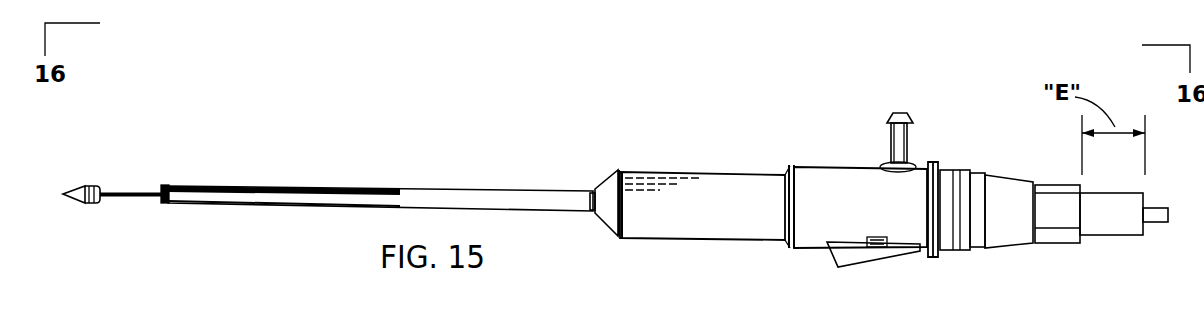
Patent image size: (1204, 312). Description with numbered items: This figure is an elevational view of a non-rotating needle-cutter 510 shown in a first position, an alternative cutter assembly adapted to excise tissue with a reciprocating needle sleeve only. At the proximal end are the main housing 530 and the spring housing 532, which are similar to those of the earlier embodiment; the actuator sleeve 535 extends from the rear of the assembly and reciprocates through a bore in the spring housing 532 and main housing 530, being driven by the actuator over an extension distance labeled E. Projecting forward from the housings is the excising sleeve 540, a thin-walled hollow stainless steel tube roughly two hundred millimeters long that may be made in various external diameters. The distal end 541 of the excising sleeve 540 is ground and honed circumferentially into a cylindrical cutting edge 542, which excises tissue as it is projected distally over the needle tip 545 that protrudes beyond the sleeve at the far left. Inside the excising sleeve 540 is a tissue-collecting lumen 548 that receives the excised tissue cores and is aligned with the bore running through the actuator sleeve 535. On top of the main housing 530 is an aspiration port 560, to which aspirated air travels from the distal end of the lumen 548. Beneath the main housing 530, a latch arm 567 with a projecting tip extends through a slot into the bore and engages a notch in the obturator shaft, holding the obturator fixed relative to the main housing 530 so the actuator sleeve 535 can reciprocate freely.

The needle-cutter 510 is at (395, 118).
The needle tip 545 is at (78, 186).
The cylindrical cutting edge 542 is at (163, 185).
The distal end of excising sleeve 541 is at (200, 186).
The excising sleeve 540 is at (490, 187).
The tissue-collecting lumen 548 is at (228, 207).
The spring housing 532 is at (705, 170).
The main housing 530 is at (837, 167).
The aspiration port 560 is at (907, 138).
The latch arm 567 is at (870, 248).
The actuator sleeve 535 is at (1098, 235).